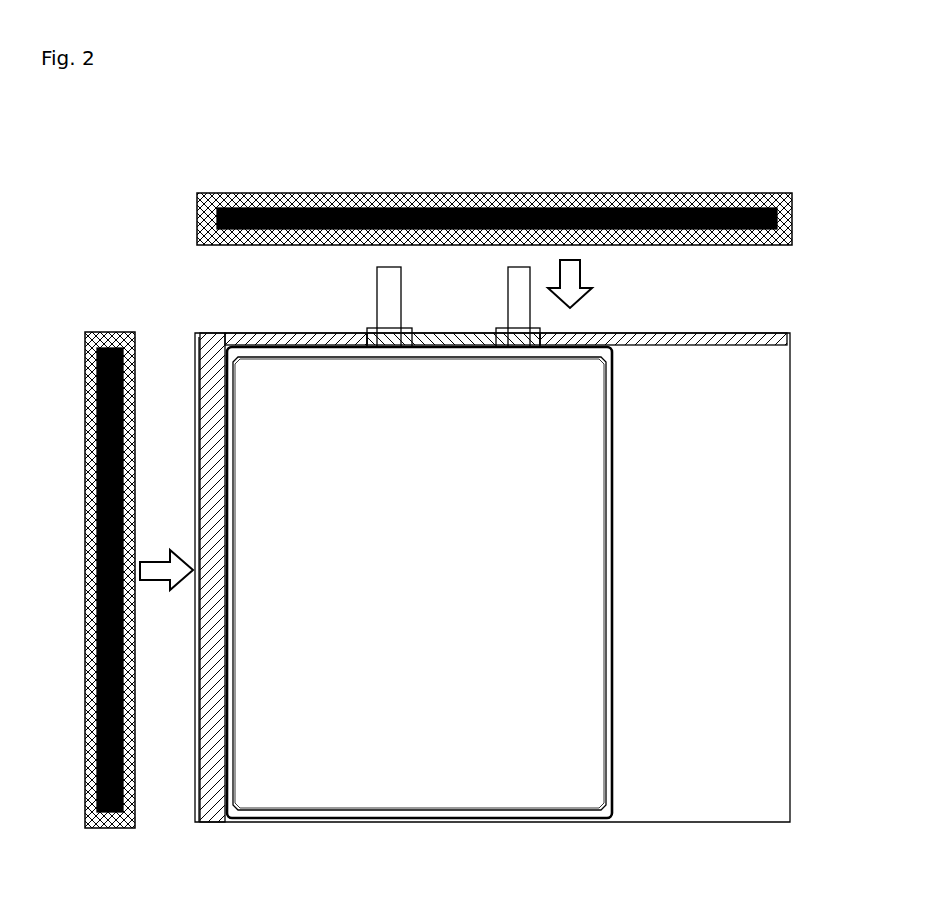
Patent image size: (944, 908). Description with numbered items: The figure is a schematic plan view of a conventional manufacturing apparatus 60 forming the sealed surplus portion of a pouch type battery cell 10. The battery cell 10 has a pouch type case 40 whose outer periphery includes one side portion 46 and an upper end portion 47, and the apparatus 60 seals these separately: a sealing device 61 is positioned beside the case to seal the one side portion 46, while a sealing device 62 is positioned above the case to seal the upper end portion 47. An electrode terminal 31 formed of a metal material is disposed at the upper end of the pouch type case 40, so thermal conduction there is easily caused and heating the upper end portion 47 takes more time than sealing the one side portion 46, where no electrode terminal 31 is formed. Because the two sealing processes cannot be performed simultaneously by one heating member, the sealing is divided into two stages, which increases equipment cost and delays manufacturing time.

The manufacturing apparatus 60 is at (93, 138).
The sealing device 62 is at (468, 193).
The sealing device 61 is at (108, 331).
The pouch type case 40 is at (792, 375).
The one side portion 46 is at (205, 808).
The upper end portion 47 is at (622, 340).
The pouch type battery cell 10 is at (200, 322).
The electrode terminal 31 is at (383, 313).